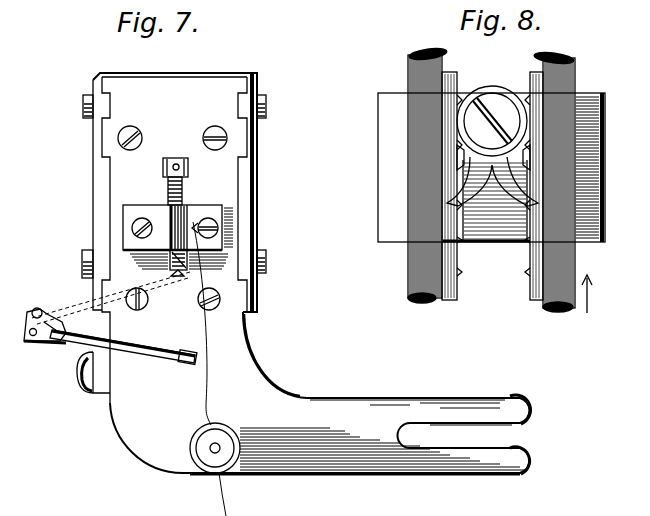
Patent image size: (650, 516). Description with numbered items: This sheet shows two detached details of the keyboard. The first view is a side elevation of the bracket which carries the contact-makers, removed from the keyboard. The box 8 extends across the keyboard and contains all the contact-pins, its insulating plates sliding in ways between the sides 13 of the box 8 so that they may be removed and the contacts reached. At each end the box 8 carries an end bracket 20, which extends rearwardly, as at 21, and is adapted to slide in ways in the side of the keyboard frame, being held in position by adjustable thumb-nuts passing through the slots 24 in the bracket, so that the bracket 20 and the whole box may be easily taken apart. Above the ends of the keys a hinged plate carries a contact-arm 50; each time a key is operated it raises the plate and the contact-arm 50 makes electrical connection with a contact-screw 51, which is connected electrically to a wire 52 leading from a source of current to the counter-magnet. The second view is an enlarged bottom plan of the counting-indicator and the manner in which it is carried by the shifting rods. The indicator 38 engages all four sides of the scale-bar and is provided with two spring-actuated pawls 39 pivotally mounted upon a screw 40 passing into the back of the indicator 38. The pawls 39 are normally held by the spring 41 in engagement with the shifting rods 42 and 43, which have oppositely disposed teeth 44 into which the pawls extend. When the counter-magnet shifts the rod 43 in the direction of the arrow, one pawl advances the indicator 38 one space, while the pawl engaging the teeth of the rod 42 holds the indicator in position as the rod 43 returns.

In FIG. 7, the box 8 is at (174, 238).
In FIG. 7, the sides of the box 13 is at (96, 190).
In FIG. 7, the contact-screw 51 is at (183, 200).
In FIG. 7, the contact-arm 50 is at (157, 353).
In FIG. 7, the wire 52 is at (219, 392).
In FIG. 7, the end bracket 20 is at (232, 338).
In FIG. 7, the rearward extension of bracket 21 is at (411, 405).
In FIG. 7, the slot 24 is at (471, 440).
In FIG. 8, the indicator 38 is at (385, 113).
In FIG. 8, the screw 40 is at (491, 104).
In FIG. 8, the spring 41 is at (463, 163).
In FIG. 8, the spring-actuated pawls 39 is at (506, 193).
In FIG. 8, the teeth 44 is at (533, 272).
In FIG. 8, the shifting rod 42 is at (432, 273).
In FIG. 8, the shifting rod 43 is at (543, 292).